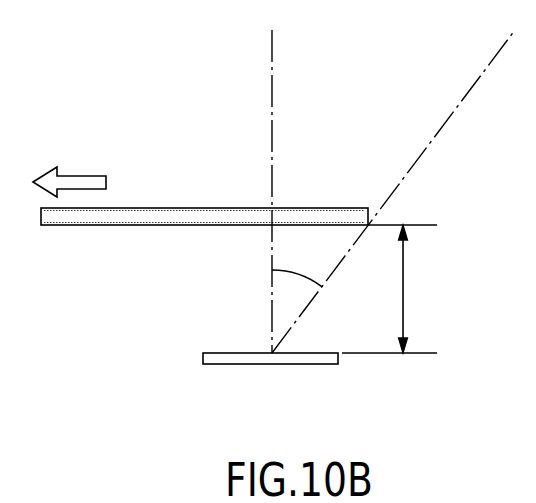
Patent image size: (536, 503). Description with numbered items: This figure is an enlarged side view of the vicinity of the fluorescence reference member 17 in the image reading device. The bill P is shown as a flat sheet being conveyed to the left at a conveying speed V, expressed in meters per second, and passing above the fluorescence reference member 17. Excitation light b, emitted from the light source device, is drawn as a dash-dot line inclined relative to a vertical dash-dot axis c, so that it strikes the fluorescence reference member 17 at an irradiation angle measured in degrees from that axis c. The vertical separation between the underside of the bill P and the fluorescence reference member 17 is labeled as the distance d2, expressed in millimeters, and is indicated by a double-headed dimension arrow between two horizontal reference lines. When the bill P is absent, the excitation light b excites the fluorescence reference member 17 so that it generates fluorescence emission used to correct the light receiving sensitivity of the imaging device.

The fluorescence reference member 17 is at (256, 364).
The bill P is at (135, 225).
The conveying speed V is at (69, 172).
The normal axis c is at (281, 191).
The excitation light b is at (393, 191).
The distance between the bill and the fluorescence reference member d2 is at (419, 289).